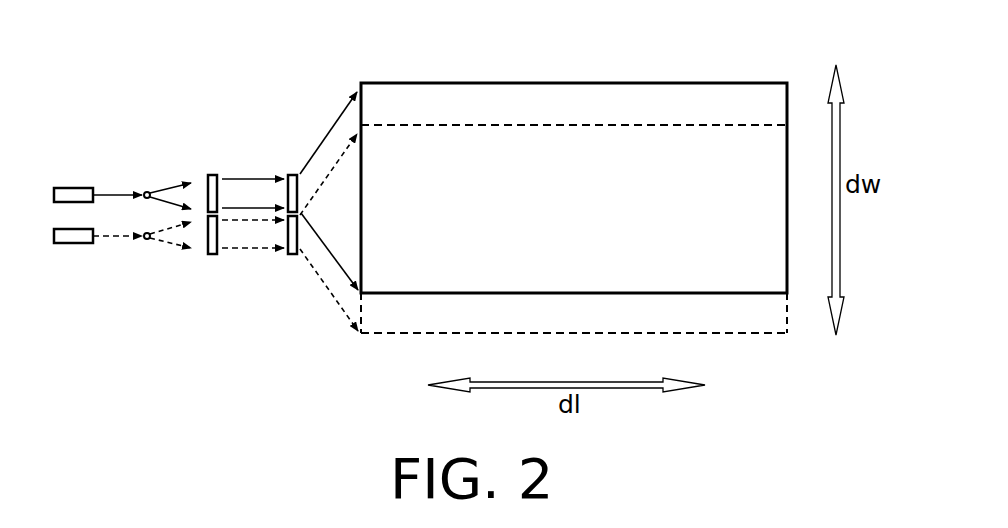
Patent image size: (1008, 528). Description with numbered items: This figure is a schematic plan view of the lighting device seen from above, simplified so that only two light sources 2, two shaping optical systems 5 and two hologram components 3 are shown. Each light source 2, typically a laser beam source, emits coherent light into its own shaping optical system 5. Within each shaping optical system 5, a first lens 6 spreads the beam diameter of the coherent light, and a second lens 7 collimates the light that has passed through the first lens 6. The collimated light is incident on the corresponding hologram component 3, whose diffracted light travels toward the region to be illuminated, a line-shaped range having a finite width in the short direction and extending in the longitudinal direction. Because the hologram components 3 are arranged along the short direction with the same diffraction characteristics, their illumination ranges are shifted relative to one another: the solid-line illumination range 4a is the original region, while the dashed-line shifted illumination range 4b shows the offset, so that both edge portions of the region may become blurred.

The light source 2 is at (73, 244).
The hologram component 3 is at (295, 254).
The illumination range 4a is at (557, 97).
The shifted illumination range 4b is at (789, 318).
The shaping optical system 5 is at (242, 328).
The first lens 6 is at (147, 241).
The second lens 7 is at (213, 254).